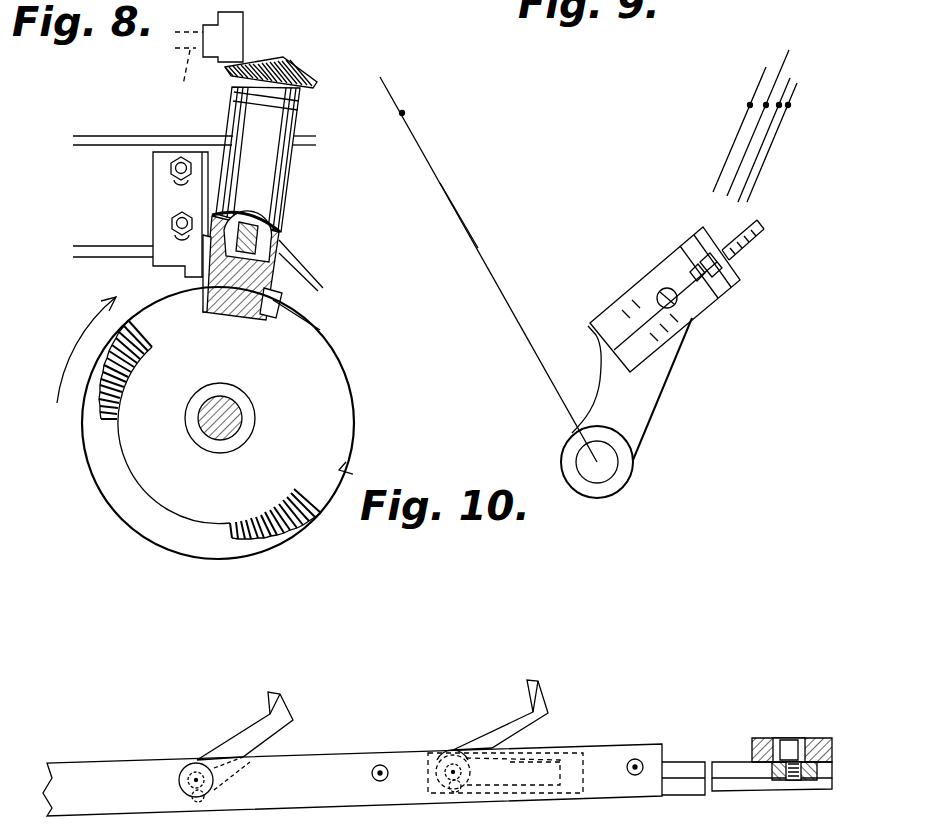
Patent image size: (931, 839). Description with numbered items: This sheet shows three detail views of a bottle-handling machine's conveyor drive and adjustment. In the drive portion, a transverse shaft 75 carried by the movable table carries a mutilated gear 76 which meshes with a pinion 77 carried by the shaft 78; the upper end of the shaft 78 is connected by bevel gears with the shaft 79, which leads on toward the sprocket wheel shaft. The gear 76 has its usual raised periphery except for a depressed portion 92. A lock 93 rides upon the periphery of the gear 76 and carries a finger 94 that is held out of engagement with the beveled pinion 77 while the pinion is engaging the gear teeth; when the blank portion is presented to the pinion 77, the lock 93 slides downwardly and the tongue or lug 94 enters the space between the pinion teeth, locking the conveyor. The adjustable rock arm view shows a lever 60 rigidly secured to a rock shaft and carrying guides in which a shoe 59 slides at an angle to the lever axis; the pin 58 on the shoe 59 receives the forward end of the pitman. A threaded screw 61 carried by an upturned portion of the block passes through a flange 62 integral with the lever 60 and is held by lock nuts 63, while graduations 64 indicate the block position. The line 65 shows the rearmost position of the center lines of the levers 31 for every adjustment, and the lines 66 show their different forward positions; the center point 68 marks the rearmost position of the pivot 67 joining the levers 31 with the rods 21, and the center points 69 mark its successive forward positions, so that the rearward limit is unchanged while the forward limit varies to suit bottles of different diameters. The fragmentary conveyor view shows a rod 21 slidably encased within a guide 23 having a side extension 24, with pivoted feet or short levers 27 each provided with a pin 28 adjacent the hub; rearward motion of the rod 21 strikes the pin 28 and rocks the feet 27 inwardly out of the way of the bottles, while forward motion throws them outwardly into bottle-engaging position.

In FIG. 10, the rod 21 is at (728, 772).
In FIG. 10, the guide 23 is at (312, 760).
In FIG. 10, the side extension 24 is at (738, 800).
In FIG. 10, the feet or short levers 27 is at (240, 728).
In FIG. 10, the pin 28 is at (221, 800).
In FIG. 10, the lever 31 is at (760, 735).
In FIG. 9, the pin 58 is at (676, 292).
In FIG. 9, the shoe 59 is at (600, 348).
In FIG. 9, the lever 60 is at (660, 378).
In FIG. 9, the threaded screw 61 is at (748, 236).
In FIG. 9, the flange 62 is at (712, 236).
In FIG. 9, the lock nuts 63 is at (722, 268).
In FIG. 9, the graduations 64 is at (660, 285).
In FIG. 9, the line 65 is at (482, 245).
In FIG. 9, the lines 66 is at (777, 72).
In FIG. 10, the pivot 67 is at (787, 738).
In FIG. 9, the center point 68 is at (406, 110).
In FIG. 9, the center points 69 is at (748, 104).
In FIG. 8, the transverse shaft 75 is at (239, 416).
In FIG. 8, the mutilated gear 76 is at (313, 522).
In FIG. 8, the pinion 77 is at (283, 309).
In FIG. 8, the shaft 78 is at (283, 247).
In FIG. 8, the shaft 79 is at (202, 62).
In FIG. 8, the depressed portion 92 is at (354, 405).
In FIG. 8, the lock 93 is at (172, 245).
In FIG. 8, the finger 94 is at (208, 288).